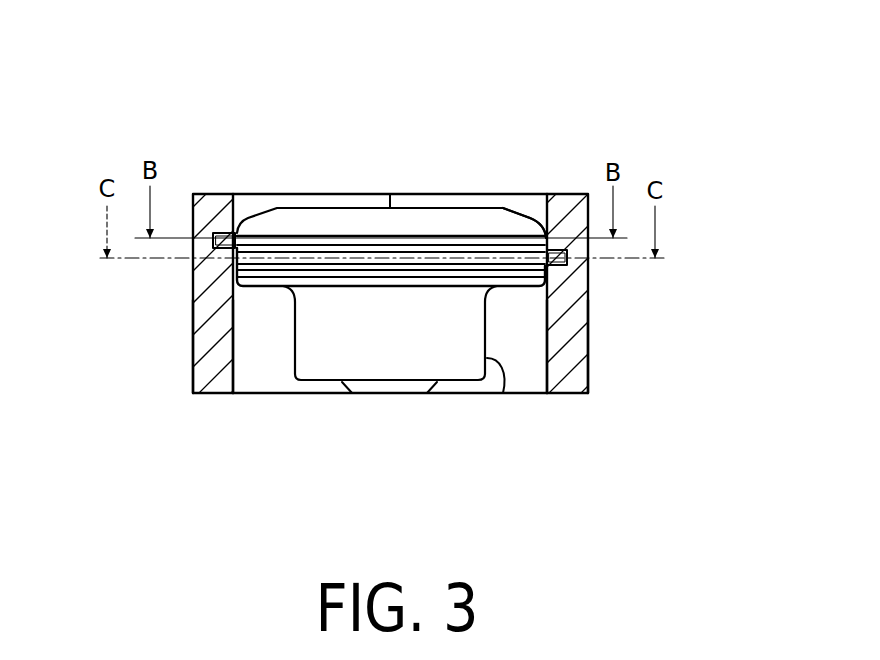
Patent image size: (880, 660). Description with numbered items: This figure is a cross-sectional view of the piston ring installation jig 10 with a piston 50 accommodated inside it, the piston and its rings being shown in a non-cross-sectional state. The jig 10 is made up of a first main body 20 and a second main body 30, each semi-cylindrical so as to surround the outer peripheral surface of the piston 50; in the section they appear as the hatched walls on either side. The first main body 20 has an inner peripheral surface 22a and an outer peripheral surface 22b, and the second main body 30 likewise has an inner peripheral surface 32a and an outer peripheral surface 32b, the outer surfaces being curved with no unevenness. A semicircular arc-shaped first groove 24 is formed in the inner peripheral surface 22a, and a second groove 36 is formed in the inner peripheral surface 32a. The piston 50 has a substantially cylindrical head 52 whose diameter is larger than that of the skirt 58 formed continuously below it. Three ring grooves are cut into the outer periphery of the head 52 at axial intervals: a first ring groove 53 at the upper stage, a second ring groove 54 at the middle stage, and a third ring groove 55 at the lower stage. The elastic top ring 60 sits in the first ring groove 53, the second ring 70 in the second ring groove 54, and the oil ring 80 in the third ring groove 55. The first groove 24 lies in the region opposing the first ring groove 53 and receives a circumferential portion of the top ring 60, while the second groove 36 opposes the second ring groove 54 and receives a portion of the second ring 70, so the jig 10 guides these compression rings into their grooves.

The piston ring installation jig 10 is at (503, 95).
The first main body 20 is at (193, 306).
The inner peripheral surface of the first main body 22a is at (233, 365).
The outer peripheral surface of the first main body 22b is at (193, 365).
The first groove 24 is at (240, 233).
The second main body 30 is at (588, 298).
The inner peripheral surface of the second main body 32a is at (538, 350).
The outer peripheral surface of the second main body 32b is at (588, 360).
The second groove 36 is at (556, 253).
The piston 50 is at (306, 208).
The head 52 is at (516, 212).
The first ring groove 53 is at (258, 236).
The second ring groove 54 is at (465, 245).
The third ring groove 55 is at (437, 277).
The skirt 58 is at (503, 385).
The top ring 60 is at (333, 246).
The second ring 70 is at (367, 252).
The oil ring 80 is at (324, 272).